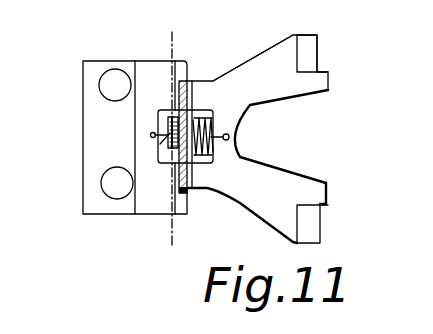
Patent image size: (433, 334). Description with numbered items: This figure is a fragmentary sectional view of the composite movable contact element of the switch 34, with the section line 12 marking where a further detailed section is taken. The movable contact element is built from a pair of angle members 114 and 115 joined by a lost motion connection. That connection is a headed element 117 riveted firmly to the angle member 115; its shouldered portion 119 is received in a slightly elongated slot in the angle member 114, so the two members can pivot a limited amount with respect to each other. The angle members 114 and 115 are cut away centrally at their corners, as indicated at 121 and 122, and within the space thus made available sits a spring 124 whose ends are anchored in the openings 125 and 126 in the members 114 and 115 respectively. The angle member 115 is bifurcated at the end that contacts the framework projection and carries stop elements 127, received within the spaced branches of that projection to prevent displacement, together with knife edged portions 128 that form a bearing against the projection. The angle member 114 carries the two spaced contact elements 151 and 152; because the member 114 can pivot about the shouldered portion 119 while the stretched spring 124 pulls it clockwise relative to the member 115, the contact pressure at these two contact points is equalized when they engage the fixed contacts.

The section line 12— 12 is at (186, 25).
The switch 34 is at (280, 125).
The angle member 114 is at (93, 155).
The angle member 115 is at (283, 44).
The headed element 117 is at (167, 125).
The shouldered portion 119 is at (188, 124).
The cut away corner 121 is at (213, 164).
The cut away corner 122 is at (168, 108).
The spring 124 is at (215, 123).
The opening 125 is at (150, 135).
The opening 126 is at (229, 140).
The stop element 127 is at (330, 81).
The knife edged portion 128 is at (311, 50).
The contact element 151 is at (108, 184).
The contact element 152 is at (108, 85).